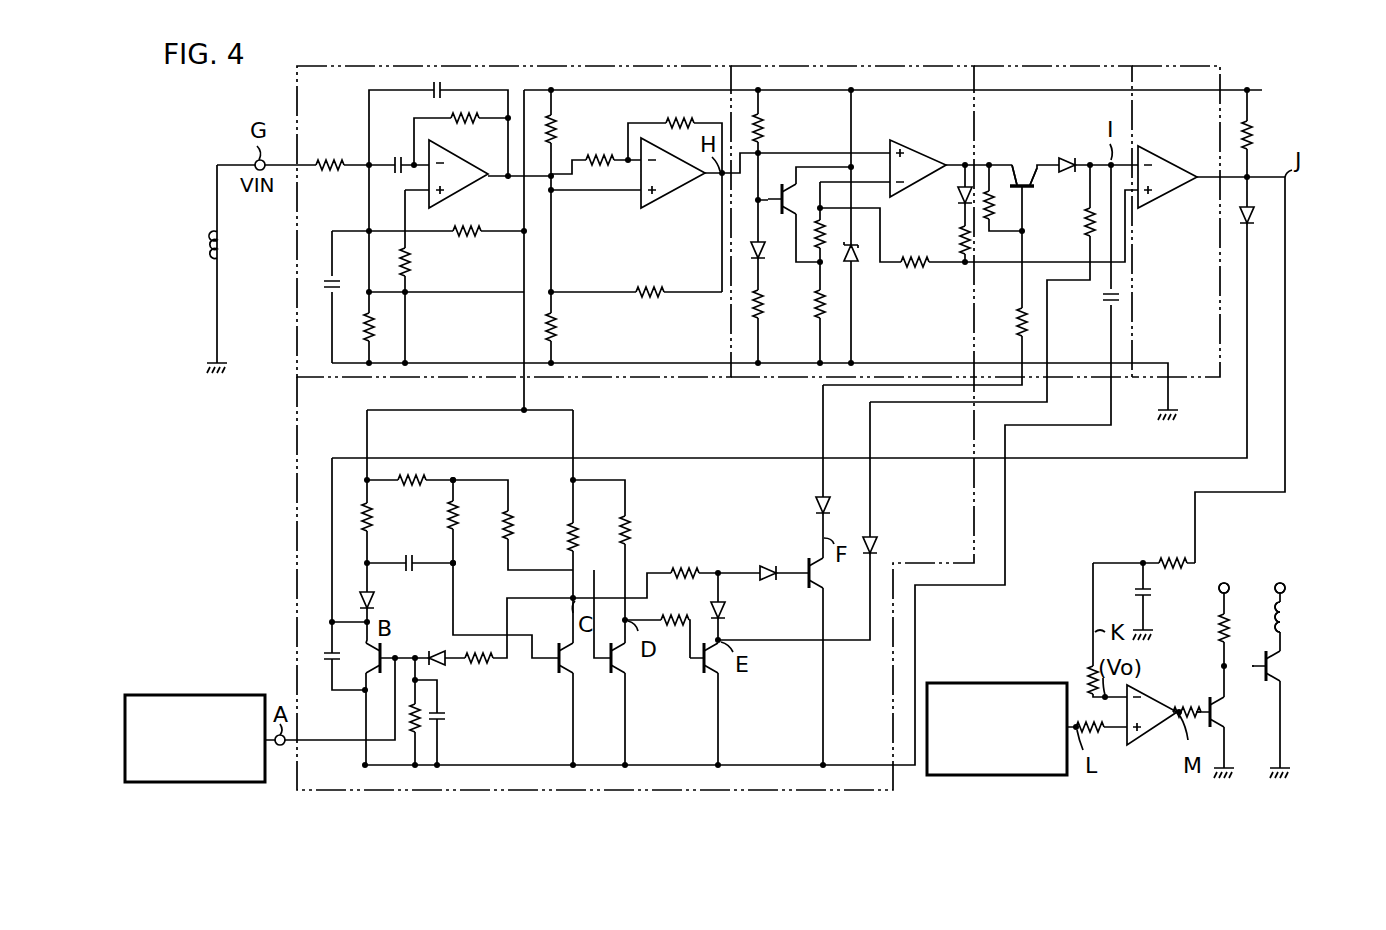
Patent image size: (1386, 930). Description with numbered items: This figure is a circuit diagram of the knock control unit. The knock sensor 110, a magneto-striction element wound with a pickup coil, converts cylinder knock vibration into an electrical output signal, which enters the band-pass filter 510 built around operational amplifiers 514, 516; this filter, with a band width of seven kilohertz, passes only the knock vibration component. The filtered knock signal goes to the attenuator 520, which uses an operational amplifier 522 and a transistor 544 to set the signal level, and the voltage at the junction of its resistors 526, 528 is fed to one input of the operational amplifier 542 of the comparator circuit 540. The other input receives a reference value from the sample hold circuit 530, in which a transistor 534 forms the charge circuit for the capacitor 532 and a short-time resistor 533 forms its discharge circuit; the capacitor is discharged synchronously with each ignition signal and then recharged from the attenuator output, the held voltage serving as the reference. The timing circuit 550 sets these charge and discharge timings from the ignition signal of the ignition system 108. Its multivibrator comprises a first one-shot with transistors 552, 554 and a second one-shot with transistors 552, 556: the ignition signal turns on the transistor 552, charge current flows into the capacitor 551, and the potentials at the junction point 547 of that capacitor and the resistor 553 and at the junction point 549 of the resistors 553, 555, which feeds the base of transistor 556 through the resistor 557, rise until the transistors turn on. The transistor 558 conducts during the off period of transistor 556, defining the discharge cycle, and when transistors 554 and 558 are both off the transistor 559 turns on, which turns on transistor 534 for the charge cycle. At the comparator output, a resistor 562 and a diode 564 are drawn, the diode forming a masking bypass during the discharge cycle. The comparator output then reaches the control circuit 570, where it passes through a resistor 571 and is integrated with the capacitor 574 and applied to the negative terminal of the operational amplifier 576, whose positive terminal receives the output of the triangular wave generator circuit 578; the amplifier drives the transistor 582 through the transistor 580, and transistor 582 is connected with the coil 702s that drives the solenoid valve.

The ignition system 108 is at (205, 695).
The knock sensor 110 is at (223, 256).
The band-pass filter 510 is at (475, 66).
The operational amplifier 514 is at (478, 195).
The operational amplifier 516 is at (683, 195).
The attenuator 520 is at (839, 66).
The operational amplifier 522 is at (935, 135).
The resistor 526 is at (918, 268).
The resistor 528 is at (962, 236).
The sample hold circuit 530 is at (1077, 66).
The capacitor 532 is at (1108, 298).
The resistor 533 is at (1090, 218).
The transistor 534 is at (1022, 182).
The comparator circuit 540 is at (1207, 66).
The operational amplifier 542 is at (1175, 195).
The transistor 544 is at (790, 218).
The junction point 547 is at (456, 565).
The junction point 549 is at (453, 478).
The timing circuit 550 is at (297, 598).
The capacitor 551 is at (410, 555).
The transistor 552 is at (383, 643).
The resistor 553 is at (458, 522).
The transistor 554 is at (562, 672).
The resistor 555 is at (414, 476).
The transistor 556 is at (616, 672).
The resistor 557 is at (514, 524).
The transistor 558 is at (712, 672).
The transistor 559 is at (818, 580).
The resistor 562 is at (1252, 120).
The diode 564 is at (1242, 220).
The control circuit 570 is at (1234, 568).
The resistor 571 is at (1162, 560).
The capacitor 574 is at (1147, 594).
The operational amplifier 576 is at (1155, 735).
The triangular wave generator circuit 578 is at (990, 683).
The transistor 580 is at (1220, 718).
The transistor 582 is at (1274, 672).
The coil 702s is at (1290, 602).